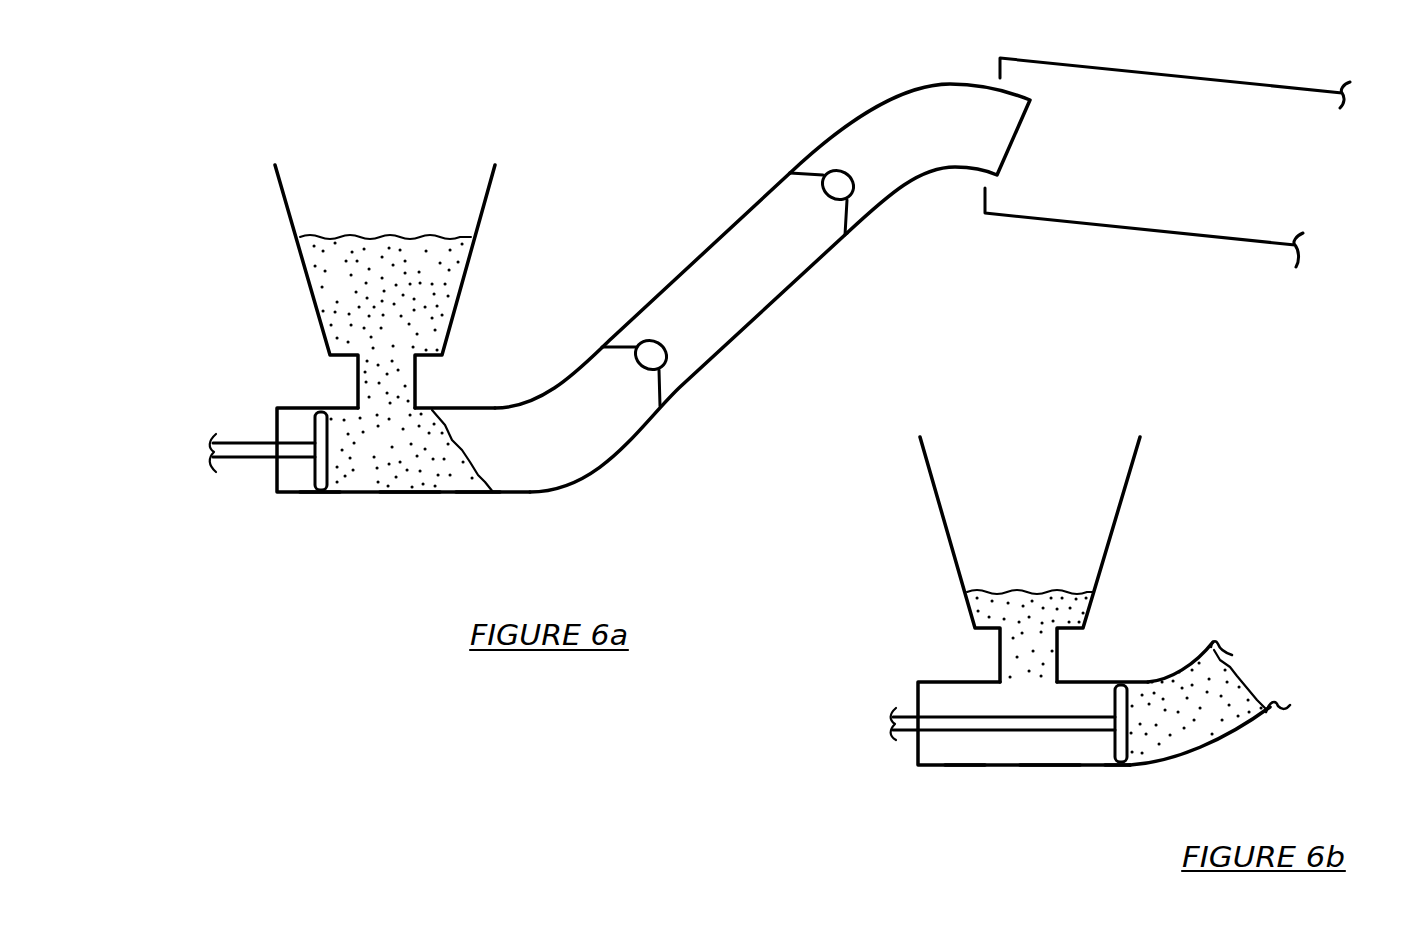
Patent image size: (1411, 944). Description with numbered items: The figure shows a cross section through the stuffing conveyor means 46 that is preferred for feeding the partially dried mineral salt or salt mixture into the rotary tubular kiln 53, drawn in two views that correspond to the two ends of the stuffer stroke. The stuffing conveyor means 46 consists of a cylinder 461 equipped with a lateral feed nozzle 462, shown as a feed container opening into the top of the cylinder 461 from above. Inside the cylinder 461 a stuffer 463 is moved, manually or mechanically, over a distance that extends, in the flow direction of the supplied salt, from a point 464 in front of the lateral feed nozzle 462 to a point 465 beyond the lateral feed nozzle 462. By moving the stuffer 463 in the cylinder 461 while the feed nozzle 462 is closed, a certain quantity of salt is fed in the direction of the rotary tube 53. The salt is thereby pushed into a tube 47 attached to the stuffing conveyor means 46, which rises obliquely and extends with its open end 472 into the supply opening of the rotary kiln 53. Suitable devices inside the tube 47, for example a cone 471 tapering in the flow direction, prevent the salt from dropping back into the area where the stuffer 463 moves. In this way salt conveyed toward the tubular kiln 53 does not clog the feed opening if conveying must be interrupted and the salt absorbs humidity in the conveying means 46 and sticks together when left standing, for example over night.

In FIG. 6A, the stuffing conveyor means 46 is at (285, 493).
In FIG. 6B, the stuffing conveyor means 46 is at (933, 765).
In FIG. 6A, the cylinder 461 is at (413, 493).
In FIG. 6B, the cylinder 461 is at (1058, 767).
In FIG. 6A, the lateral feed nozzle 462 is at (358, 378).
In FIG. 6B, the lateral feed nozzle 462 is at (1000, 655).
In FIG. 6A, the stuffer 463 is at (252, 448).
In FIG. 6B, the stuffer 463 is at (902, 715).
In FIG. 6A, the point in front of the lateral feed nozzle 464 is at (320, 508).
In FIG. 6B, the point in front of the lateral feed nozzle 464 is at (964, 778).
In FIG. 6A, the point beyond the lateral feed nozzle 465 is at (476, 508).
In FIG. 6B, the point beyond the lateral feed nozzle 465 is at (1123, 778).
In FIG. 6A, the tube 47 is at (708, 247).
In FIG. 6B, the tube 47 is at (1181, 670).
In FIG. 6A, the cone 471 is at (759, 293).
In FIG. 6A, the open end 472 is at (915, 108).
In FIG. 6A, the rotary tubular kiln 53 is at (1167, 162).